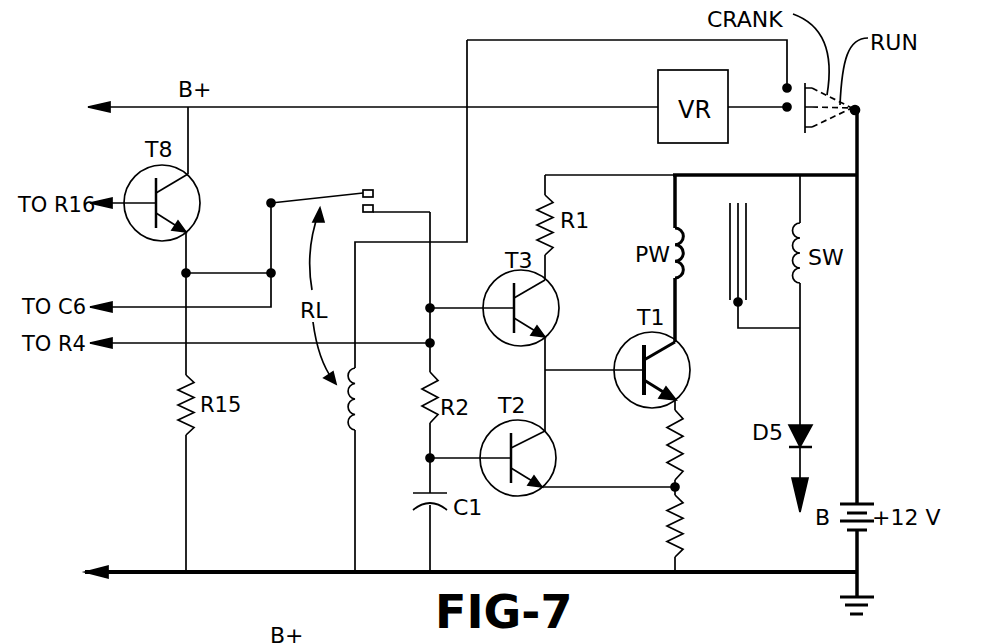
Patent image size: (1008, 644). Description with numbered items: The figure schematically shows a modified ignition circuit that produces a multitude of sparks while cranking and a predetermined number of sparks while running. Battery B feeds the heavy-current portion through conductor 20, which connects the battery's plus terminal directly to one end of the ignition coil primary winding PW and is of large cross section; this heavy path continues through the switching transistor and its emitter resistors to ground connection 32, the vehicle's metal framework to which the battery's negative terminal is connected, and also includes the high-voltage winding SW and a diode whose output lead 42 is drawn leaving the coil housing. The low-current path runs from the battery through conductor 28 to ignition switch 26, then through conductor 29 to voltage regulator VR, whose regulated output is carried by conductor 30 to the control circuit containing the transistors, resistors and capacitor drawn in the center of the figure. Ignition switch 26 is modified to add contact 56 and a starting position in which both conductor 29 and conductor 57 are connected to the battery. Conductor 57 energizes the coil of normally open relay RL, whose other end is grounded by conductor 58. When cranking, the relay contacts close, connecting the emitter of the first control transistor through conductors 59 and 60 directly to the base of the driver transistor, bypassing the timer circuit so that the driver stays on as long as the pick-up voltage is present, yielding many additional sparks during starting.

The conductor 20 is at (858, 344).
The ignition switch 26 is at (850, 108).
The conductor 28 is at (857, 160).
The conductor 29 is at (745, 112).
The conductor 30 is at (430, 107).
The ground connection 32 is at (484, 572).
The output conductor 42 is at (806, 476).
The contact 56 is at (771, 92).
The conductor 57 is at (575, 40).
The conductor 58 is at (357, 522).
The conductor 59 is at (262, 183).
The conductor 60 is at (401, 190).